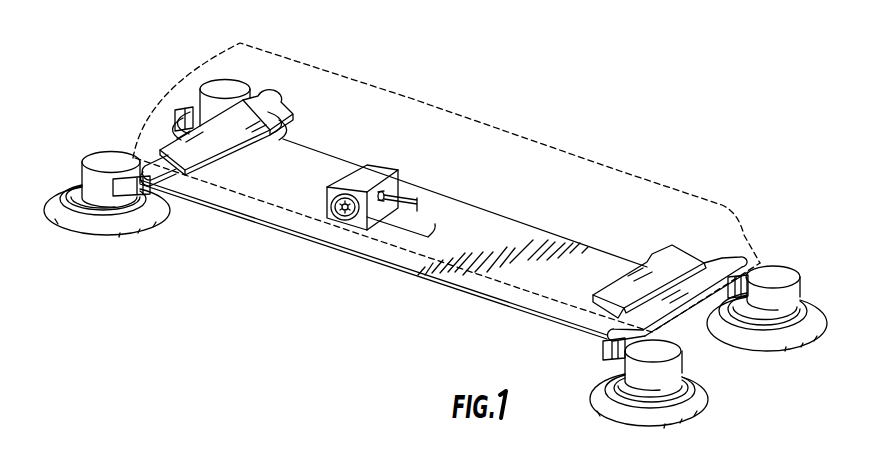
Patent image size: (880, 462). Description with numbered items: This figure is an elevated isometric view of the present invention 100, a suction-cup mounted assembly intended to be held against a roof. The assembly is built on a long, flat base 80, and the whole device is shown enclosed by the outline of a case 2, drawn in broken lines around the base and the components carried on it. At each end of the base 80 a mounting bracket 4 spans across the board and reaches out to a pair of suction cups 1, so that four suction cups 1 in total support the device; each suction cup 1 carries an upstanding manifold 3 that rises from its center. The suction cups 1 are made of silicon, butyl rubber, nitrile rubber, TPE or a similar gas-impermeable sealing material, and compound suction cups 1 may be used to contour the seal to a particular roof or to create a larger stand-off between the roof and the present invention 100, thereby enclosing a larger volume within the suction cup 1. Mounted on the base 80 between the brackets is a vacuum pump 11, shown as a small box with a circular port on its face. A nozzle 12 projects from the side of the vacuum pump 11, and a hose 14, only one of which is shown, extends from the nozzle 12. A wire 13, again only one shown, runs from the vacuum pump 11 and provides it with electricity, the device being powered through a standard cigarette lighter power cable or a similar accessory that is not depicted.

The present invention 100 is at (700, 104).
The base 80 is at (334, 240).
The case 2 is at (548, 163).
The suction cup 1 is at (170, 127).
The manifold 3 is at (213, 85).
The mounting bracket 4 is at (267, 100).
The vacuum pump 11 is at (327, 203).
The nozzle 12 is at (380, 192).
The wire 13 is at (423, 227).
The hose 14 is at (408, 202).